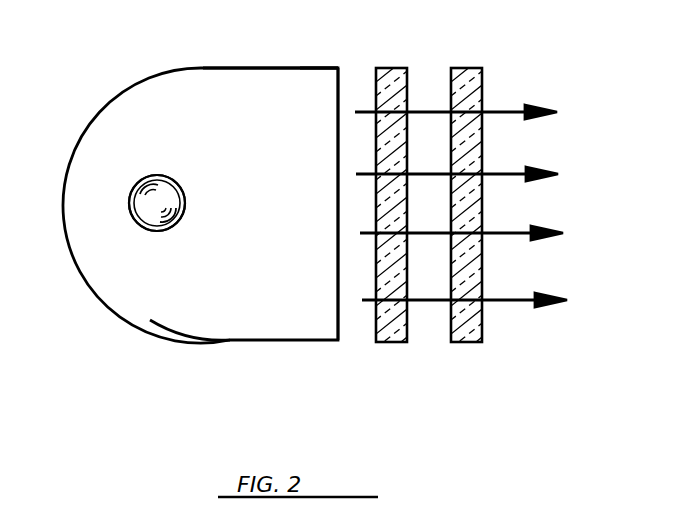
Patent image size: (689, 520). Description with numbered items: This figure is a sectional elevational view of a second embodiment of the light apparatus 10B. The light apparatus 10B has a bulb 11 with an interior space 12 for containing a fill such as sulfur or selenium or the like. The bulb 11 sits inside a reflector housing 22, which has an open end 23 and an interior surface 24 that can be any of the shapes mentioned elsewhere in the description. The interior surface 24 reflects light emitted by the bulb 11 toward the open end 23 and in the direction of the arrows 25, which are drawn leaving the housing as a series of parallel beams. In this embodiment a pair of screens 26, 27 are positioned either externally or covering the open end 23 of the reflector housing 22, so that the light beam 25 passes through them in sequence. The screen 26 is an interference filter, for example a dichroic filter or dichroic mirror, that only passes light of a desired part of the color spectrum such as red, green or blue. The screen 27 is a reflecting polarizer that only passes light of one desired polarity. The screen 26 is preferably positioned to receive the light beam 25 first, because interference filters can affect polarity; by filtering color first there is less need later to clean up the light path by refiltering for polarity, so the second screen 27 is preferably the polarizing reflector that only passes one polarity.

The light apparatus 10B is at (317, 62).
The bulb 11 is at (130, 204).
The interior space 12 is at (150, 210).
The reflector housing 22 is at (172, 81).
The open end 23 is at (312, 96).
The interior surface 24 is at (203, 74).
The arrows 25 is at (505, 110).
The screen 26 is at (387, 344).
The screen 27 is at (461, 344).